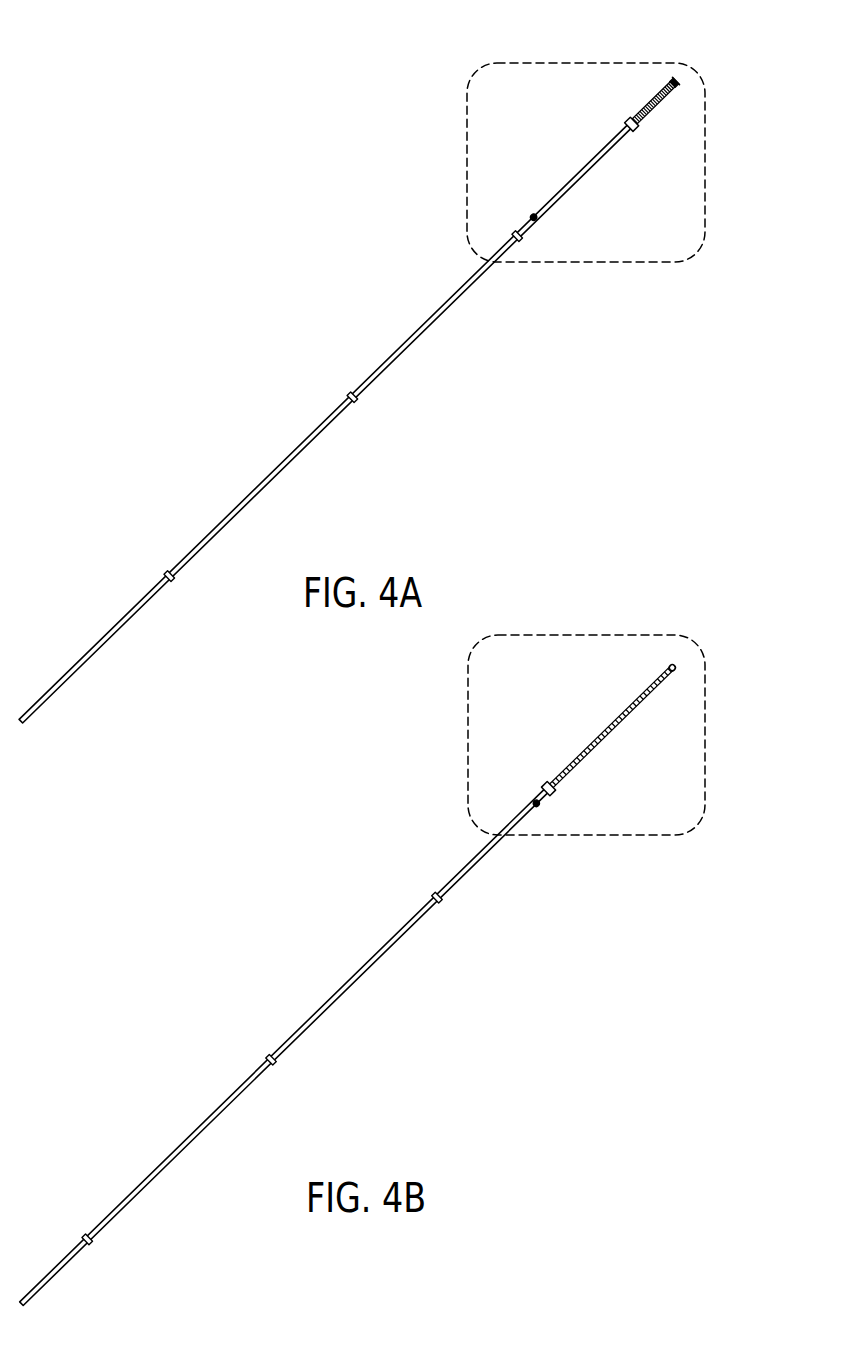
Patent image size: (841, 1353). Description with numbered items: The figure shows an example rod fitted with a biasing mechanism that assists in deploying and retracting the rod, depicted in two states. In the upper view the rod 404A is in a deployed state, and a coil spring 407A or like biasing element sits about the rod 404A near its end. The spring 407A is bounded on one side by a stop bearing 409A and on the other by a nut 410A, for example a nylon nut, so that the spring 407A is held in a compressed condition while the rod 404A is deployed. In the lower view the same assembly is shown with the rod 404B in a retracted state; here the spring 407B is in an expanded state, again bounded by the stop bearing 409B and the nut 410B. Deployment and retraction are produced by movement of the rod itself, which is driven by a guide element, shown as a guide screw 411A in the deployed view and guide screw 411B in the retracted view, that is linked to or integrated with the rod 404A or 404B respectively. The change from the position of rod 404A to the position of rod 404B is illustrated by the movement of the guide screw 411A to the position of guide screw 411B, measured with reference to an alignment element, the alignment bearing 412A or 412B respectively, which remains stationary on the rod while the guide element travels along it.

In FIG. 4A, the rod 404A is at (418, 340).
In FIG. 4A, the coil spring 407A is at (656, 104).
In FIG. 4A, the stop bearing 409A is at (628, 124).
In FIG. 4A, the nut 410A is at (680, 85).
In FIG. 4A, the guide screw 411A is at (540, 220).
In FIG. 4A, the alignment bearing 412A is at (516, 232).
In FIG. 4B, the rod 404B is at (218, 1110).
In FIG. 4B, the coil spring 407B is at (620, 723).
In FIG. 4B, the stop bearing 409B is at (545, 785).
In FIG. 4B, the nut 410B is at (673, 664).
In FIG. 4B, the guide screw 411B is at (540, 806).
In FIG. 4B, the alignment bearing 412B is at (435, 893).